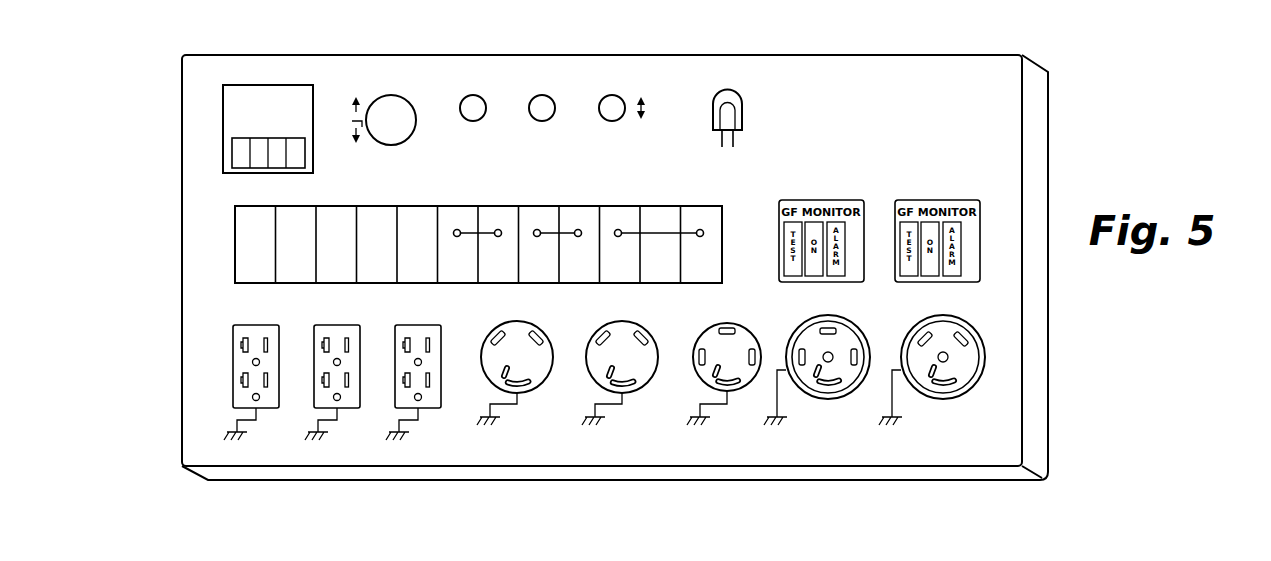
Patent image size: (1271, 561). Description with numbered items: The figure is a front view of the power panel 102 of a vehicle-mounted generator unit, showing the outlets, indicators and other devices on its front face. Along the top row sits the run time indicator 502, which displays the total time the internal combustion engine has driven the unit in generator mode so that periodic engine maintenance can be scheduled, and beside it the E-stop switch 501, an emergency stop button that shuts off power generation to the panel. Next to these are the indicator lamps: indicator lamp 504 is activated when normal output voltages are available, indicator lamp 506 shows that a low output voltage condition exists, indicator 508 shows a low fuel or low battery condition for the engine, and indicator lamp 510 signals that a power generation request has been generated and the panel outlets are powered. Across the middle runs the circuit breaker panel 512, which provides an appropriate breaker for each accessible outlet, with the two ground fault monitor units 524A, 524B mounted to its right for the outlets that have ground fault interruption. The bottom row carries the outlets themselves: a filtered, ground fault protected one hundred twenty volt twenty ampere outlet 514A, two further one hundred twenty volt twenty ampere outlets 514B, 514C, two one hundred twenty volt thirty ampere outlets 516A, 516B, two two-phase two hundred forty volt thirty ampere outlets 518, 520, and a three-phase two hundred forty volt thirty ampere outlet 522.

The power panel 102 is at (1102, 101).
The E-stop switch 501 is at (391, 95).
The run time indicator 502 is at (316, 108).
The indicator lamp 504 is at (473, 95).
The indicator lamp 506 is at (542, 95).
The indicator 508 is at (612, 95).
The indicator lamp 510 is at (726, 90).
The circuit breaker panel 512 is at (208, 247).
The filtered ground fault protected 120 VAC 20 ampere outlet 514A is at (233, 382).
The 120 VAC 20 ampere outlet 514B is at (314, 382).
The 120 VAC 20 ampere outlet 514C is at (395, 382).
The 120 VAC 30 ampere outlet 516A is at (538, 387).
The 120 VAC 30 ampere outlet 516B is at (643, 387).
The two-phase 240 VAC 30 ampere outlet 518 is at (730, 392).
The two-phase 240 VAC 30 ampere outlet 520 is at (828, 399).
The three-phase 240 VAC 30 ampere outlet 522 is at (943, 399).
The ground fault monitor unit 524A is at (812, 198).
The ground fault monitor unit 524B is at (930, 198).